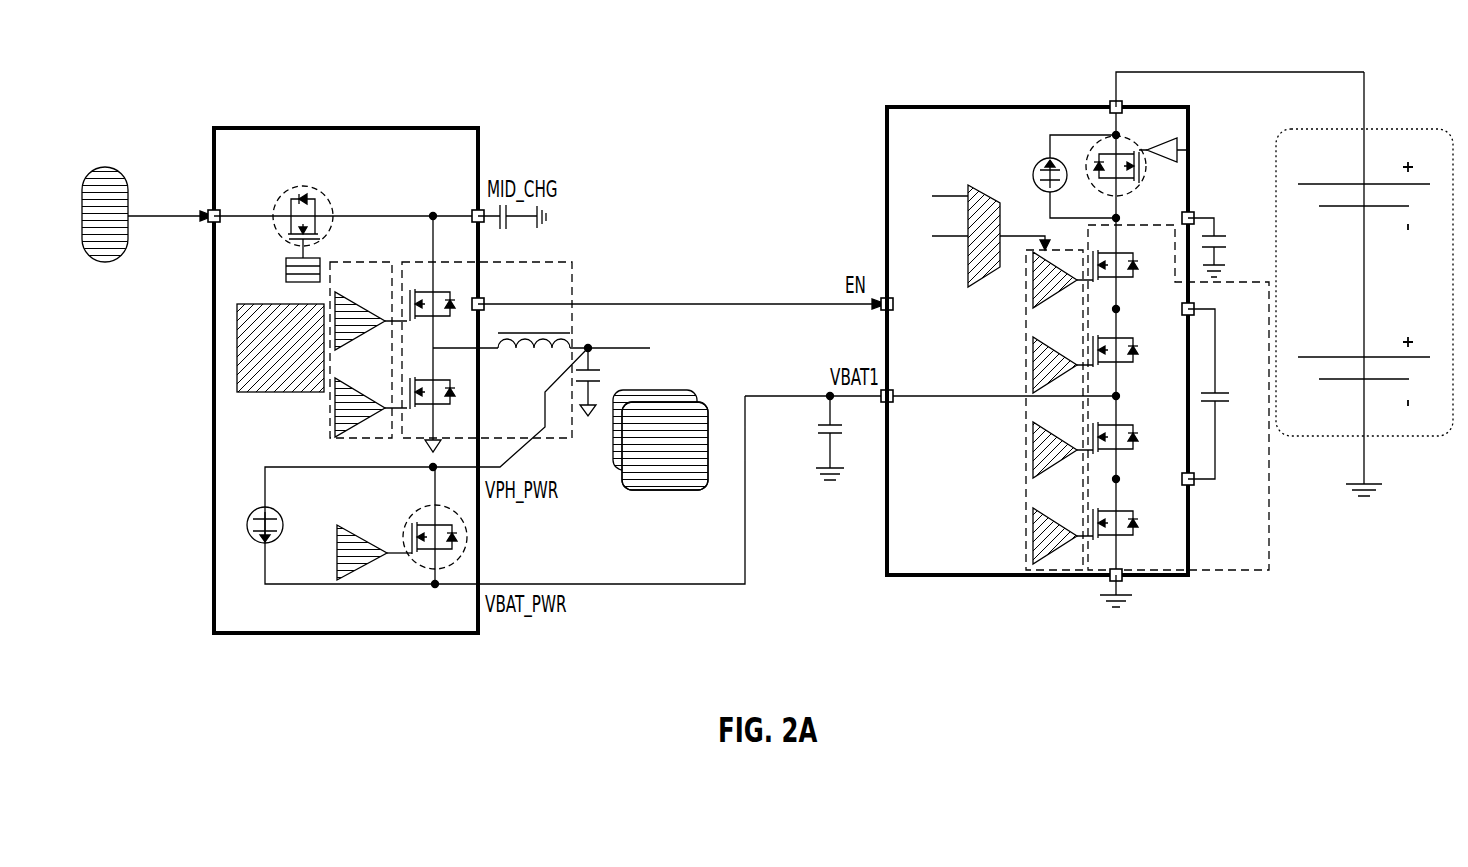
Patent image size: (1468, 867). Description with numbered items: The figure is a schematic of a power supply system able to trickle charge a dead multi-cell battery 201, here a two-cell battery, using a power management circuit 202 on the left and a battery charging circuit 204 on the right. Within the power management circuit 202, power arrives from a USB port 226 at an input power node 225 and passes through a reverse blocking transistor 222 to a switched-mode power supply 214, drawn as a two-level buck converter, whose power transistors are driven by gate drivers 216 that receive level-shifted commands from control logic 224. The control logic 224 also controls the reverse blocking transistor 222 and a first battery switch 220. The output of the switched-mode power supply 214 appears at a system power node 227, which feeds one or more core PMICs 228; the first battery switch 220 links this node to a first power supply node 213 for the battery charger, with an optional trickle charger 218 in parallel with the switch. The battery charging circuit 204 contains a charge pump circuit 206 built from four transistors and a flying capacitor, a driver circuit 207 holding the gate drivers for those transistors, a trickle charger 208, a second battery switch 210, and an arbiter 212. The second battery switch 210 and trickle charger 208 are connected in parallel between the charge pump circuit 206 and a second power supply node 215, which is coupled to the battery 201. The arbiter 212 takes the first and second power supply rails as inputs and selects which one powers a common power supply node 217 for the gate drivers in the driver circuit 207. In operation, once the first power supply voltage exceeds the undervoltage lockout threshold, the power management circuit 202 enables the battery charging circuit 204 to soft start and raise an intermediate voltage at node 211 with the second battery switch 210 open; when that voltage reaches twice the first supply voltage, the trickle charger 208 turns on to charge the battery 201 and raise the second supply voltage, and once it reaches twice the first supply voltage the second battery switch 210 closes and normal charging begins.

The multi-cell battery 201 is at (1364, 277).
The power management circuit 202 is at (346, 347).
The battery charging circuit 204 is at (1037, 307).
The charge pump circuit 206 is at (1178, 432).
The driver circuit 207 is at (1019, 410).
The trickle charger 208 is at (1038, 140).
The second battery switch 210 is at (1170, 150).
The node 211 is at (1226, 198).
The arbiter 212 is at (957, 261).
The first power supply node 213 is at (849, 437).
The switched-mode power supply 214 is at (508, 334).
The second power supply node 215 is at (1218, 71).
The gate drivers 216 is at (376, 330).
The common power supply node 217 is at (1035, 205).
The trickle charger 218 is at (276, 526).
The first battery switch 220 is at (466, 525).
The reverse blocking transistor 222 is at (337, 225).
The control logic 224 is at (272, 330).
The input power node 225 is at (221, 181).
The USB port 226 is at (147, 179).
The system power node 227 is at (645, 362).
The core PMICs 228 is at (672, 422).